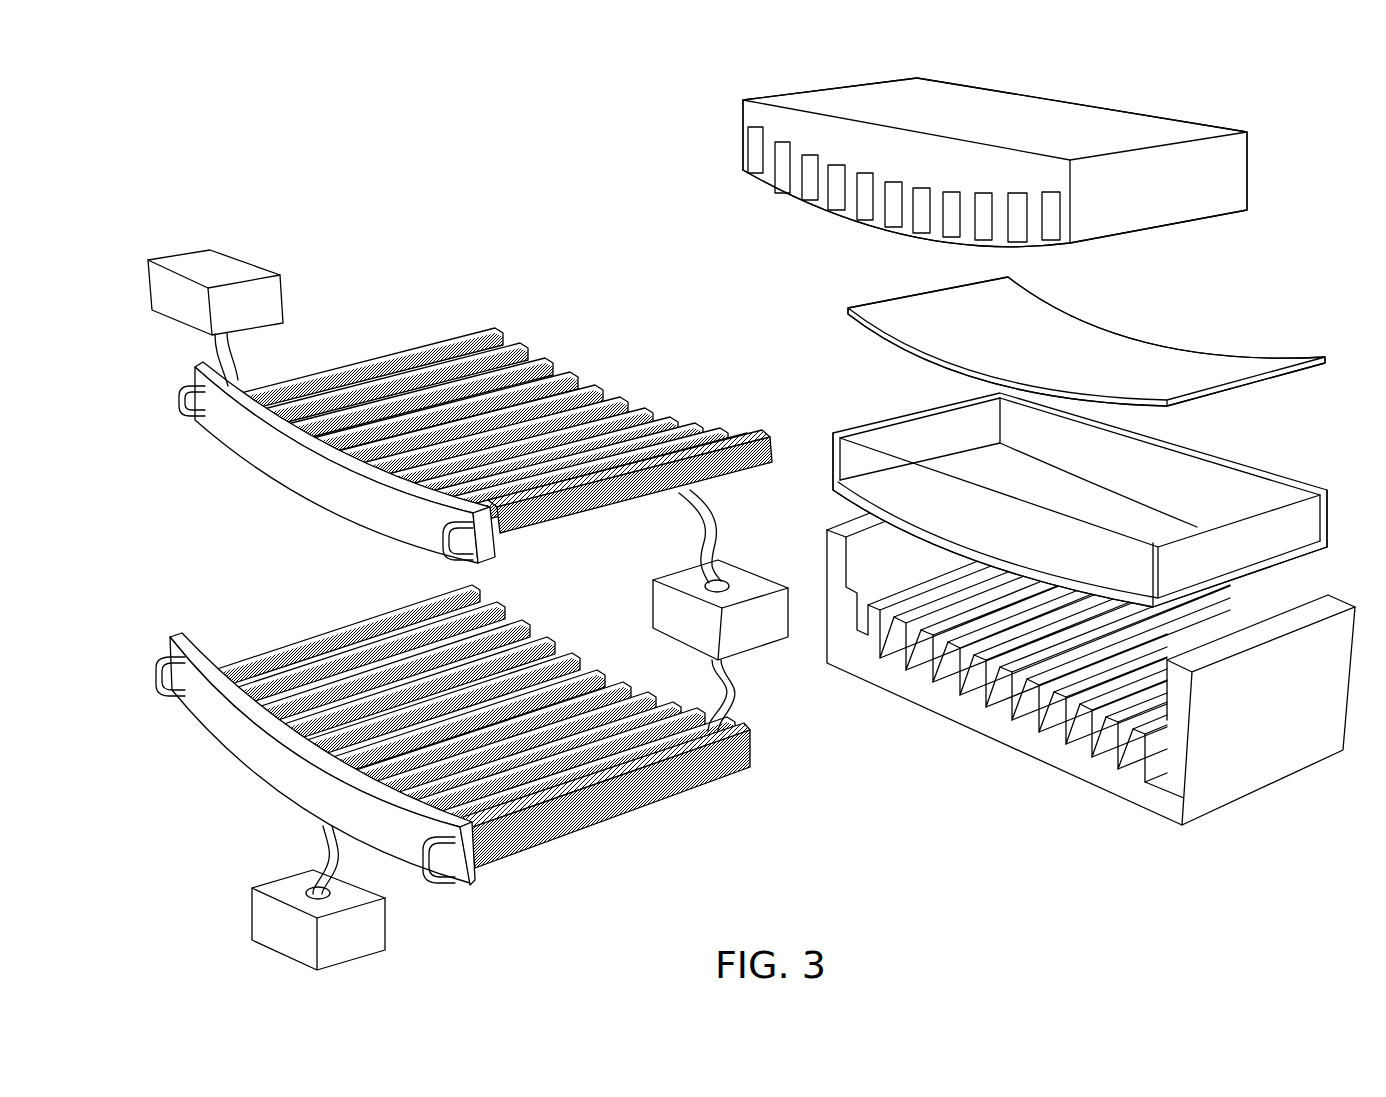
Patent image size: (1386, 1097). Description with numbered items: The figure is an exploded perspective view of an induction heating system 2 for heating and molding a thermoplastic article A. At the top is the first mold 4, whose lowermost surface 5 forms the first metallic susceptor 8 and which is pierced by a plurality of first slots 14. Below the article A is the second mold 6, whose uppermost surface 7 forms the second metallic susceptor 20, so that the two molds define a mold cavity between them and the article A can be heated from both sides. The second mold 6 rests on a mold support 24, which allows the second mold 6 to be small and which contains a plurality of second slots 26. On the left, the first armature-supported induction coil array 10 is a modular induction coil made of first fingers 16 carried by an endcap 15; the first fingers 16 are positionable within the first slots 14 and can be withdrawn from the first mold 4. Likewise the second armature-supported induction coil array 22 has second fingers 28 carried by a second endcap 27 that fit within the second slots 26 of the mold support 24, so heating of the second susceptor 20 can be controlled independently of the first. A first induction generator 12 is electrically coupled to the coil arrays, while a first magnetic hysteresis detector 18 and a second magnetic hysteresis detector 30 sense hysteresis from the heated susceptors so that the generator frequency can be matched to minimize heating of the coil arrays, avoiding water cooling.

The induction heating system 2 is at (240, 124).
The first mold 4 is at (726, 132).
The lowermost surface 5 is at (905, 238).
The second mold 6 is at (1270, 447).
The uppermost surface 7 is at (935, 470).
The first metallic susceptor 8 is at (845, 212).
The first armature-supported induction coil array 10 is at (343, 318).
The first induction generator 12 is at (652, 612).
The first slots 14 is at (788, 180).
The endcap 15 is at (260, 447).
The first fingers 16 is at (450, 320).
The first magnetic hysteresis detector 18 is at (229, 262).
The second metallic susceptor 20 is at (1005, 537).
The second armature-supported induction coil array 22 is at (290, 607).
The mold support 24 is at (905, 733).
The second slots 26 is at (1020, 712).
The second endcap 27 is at (240, 737).
The second fingers 28 is at (658, 824).
The second magnetic hysteresis detector 30 is at (259, 883).
The thermoplastic article A is at (1176, 330).